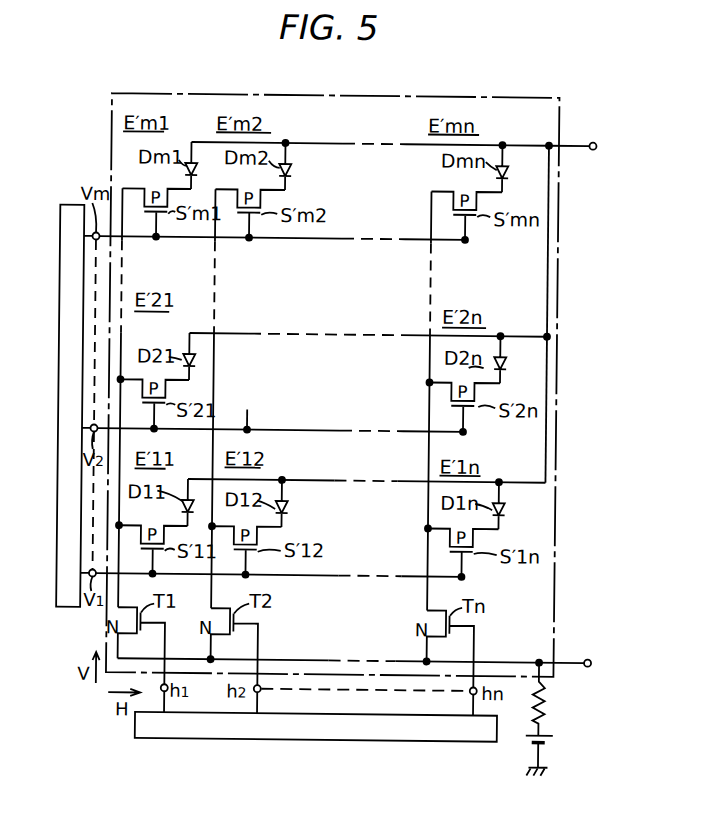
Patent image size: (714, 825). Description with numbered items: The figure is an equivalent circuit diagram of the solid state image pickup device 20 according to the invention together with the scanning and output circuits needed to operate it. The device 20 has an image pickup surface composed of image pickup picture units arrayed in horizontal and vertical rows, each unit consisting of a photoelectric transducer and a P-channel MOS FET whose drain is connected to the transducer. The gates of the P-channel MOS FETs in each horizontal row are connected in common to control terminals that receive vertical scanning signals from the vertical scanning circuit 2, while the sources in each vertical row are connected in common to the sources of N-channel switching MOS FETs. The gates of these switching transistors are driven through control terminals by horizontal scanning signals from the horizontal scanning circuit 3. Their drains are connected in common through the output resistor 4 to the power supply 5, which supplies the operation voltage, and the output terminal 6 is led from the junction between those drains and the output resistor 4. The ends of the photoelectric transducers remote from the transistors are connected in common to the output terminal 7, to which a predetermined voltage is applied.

The vertical scanning circuit 2 is at (66, 205).
The horizontal scanning circuit 3 is at (193, 738).
The output resistor 4 is at (551, 703).
The power supply 5 is at (559, 732).
The output terminal 6 is at (592, 654).
The output terminal 7 is at (592, 138).
The solid state image pickup device 20 is at (223, 82).